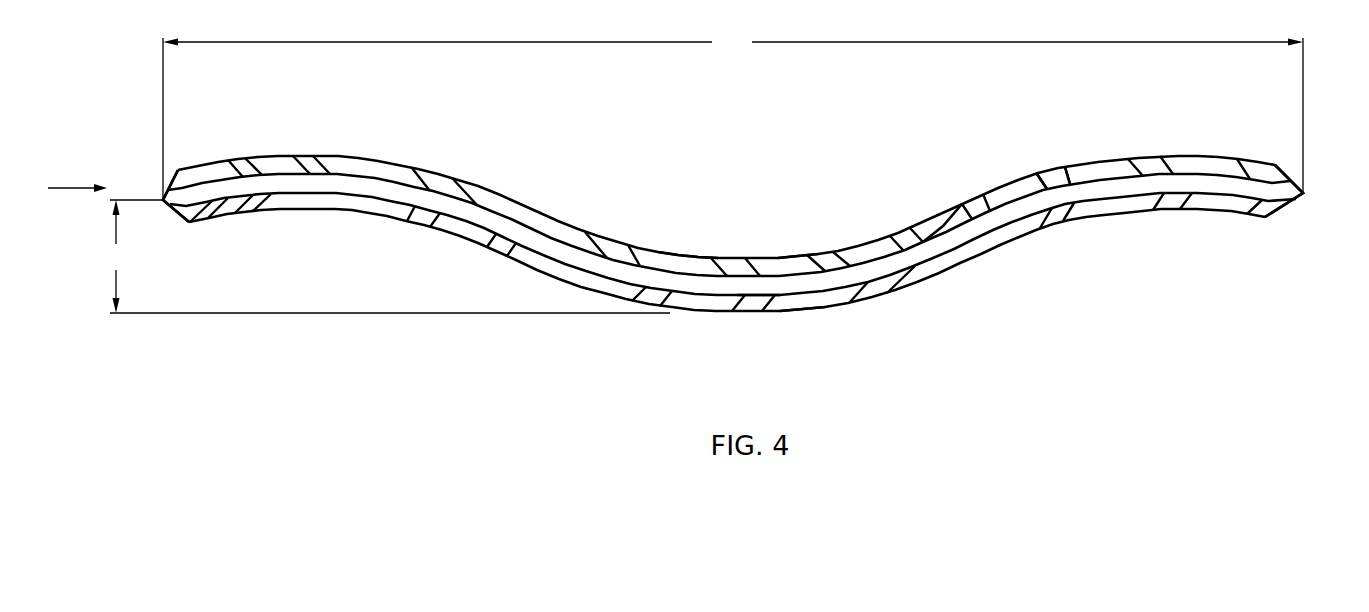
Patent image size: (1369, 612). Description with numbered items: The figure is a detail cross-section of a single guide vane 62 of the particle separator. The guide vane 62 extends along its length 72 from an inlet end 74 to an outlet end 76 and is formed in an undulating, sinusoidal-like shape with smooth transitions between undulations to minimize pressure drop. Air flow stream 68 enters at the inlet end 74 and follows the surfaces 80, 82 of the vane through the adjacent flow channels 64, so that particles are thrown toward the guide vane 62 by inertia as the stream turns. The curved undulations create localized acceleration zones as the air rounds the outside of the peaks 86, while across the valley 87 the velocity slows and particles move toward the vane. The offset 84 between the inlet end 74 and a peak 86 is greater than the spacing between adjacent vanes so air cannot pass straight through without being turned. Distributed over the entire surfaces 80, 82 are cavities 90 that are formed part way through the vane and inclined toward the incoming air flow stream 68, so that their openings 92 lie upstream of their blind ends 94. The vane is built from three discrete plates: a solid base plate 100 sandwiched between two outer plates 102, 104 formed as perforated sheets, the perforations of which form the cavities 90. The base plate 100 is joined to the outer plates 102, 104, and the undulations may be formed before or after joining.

The guide vane 62 is at (344, 238).
The flow channels 64 is at (393, 152).
The air flow stream 68 is at (70, 187).
The length 72 is at (733, 113).
The inlet end 74 is at (167, 205).
The outlet end 76 is at (1303, 193).
The surface 80 is at (800, 257).
The surface 82 is at (440, 237).
The offset 84 is at (384, 256).
The peak 86 is at (285, 157).
The valley 87 is at (688, 257).
The cavities 90 is at (448, 177).
The openings 92 is at (1049, 166).
The blind ends 94 is at (1069, 177).
The base plate 100 is at (760, 287).
The outer plate 102 is at (943, 218).
The outer plate 104 is at (800, 305).